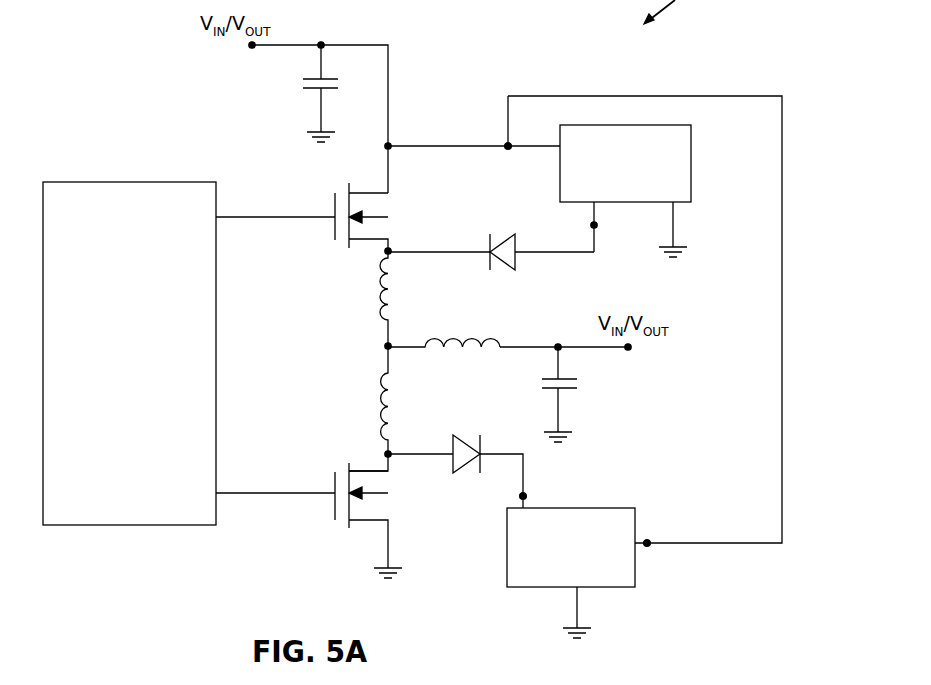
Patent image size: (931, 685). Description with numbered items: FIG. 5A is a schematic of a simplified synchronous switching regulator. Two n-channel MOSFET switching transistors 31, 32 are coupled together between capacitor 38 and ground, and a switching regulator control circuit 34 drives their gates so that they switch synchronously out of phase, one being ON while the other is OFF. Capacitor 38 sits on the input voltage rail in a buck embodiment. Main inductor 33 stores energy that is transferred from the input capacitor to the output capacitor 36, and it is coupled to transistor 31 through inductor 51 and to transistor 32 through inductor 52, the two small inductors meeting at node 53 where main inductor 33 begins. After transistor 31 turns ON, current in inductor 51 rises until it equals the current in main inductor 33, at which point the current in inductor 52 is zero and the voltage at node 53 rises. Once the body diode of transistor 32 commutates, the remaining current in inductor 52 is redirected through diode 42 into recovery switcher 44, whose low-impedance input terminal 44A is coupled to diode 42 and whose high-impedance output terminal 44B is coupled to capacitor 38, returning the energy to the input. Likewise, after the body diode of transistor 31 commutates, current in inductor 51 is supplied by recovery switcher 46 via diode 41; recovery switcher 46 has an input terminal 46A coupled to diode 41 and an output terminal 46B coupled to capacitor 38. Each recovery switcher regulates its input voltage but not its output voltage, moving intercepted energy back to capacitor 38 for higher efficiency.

The switching transistor 31 is at (390, 217).
The switching transistor 32 is at (388, 504).
The main inductor 33 is at (440, 336).
The switching regulator control circuit 34 is at (121, 182).
The capacitor 36 is at (548, 390).
The capacitor 38 is at (327, 78).
The diode 41 is at (516, 272).
The diode 42 is at (455, 433).
The recovery switcher 44 is at (522, 588).
The input terminal 44A is at (526, 496).
The output terminal 44B is at (648, 543).
The recovery switcher 46 is at (691, 165).
The input terminal 46A is at (597, 226).
The output terminal 46B is at (506, 150).
The inductor 51 is at (378, 298).
The inductor 52 is at (378, 410).
The node 53 is at (381, 346).